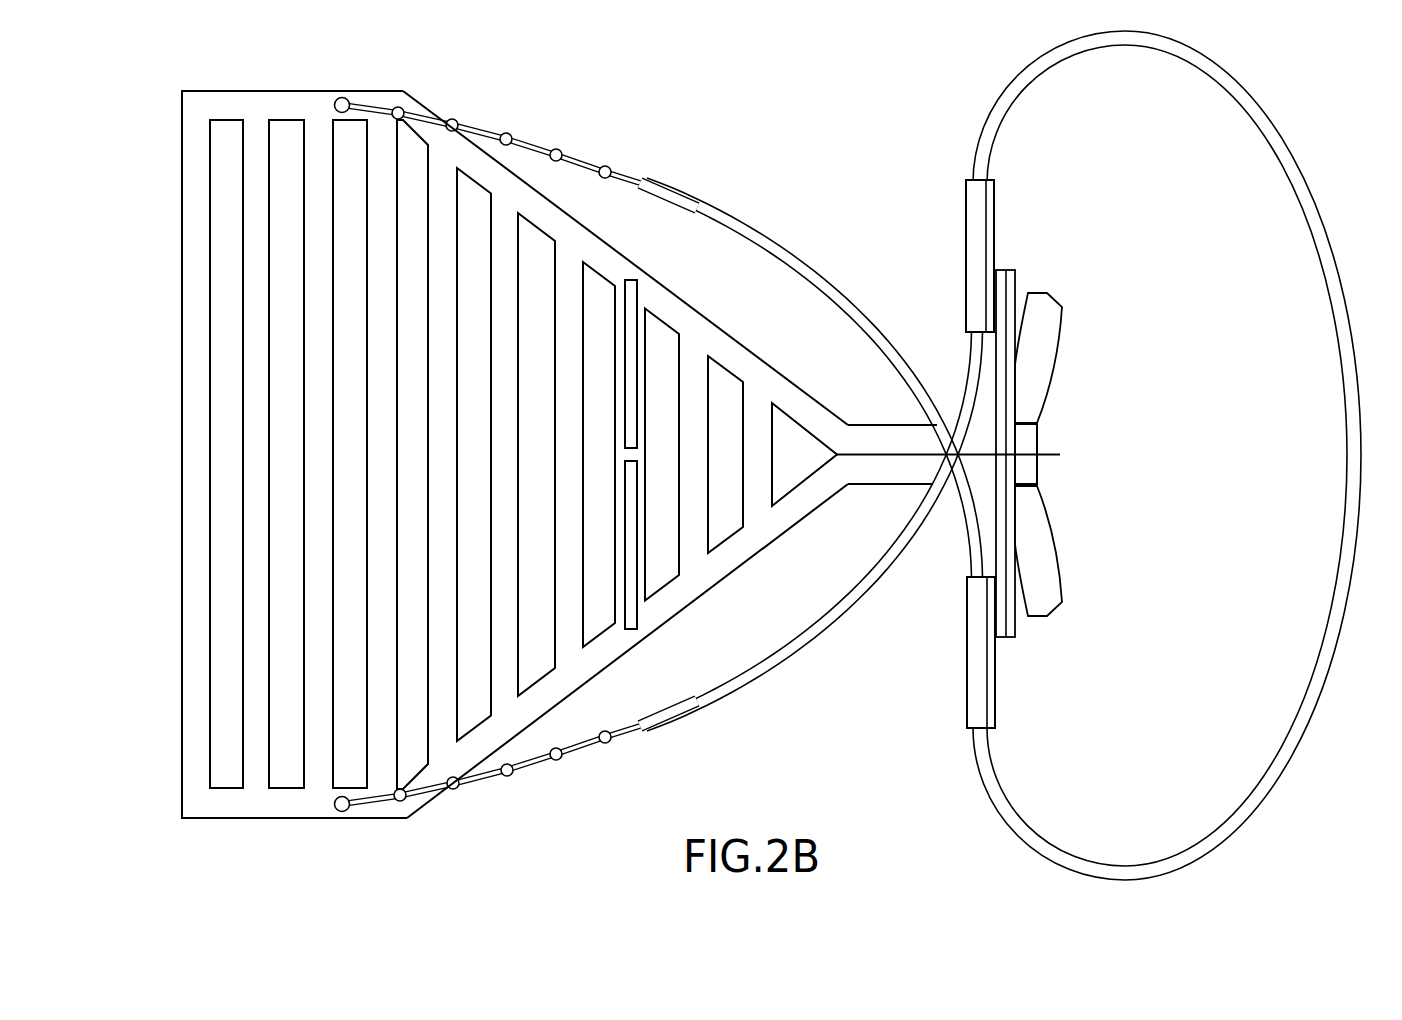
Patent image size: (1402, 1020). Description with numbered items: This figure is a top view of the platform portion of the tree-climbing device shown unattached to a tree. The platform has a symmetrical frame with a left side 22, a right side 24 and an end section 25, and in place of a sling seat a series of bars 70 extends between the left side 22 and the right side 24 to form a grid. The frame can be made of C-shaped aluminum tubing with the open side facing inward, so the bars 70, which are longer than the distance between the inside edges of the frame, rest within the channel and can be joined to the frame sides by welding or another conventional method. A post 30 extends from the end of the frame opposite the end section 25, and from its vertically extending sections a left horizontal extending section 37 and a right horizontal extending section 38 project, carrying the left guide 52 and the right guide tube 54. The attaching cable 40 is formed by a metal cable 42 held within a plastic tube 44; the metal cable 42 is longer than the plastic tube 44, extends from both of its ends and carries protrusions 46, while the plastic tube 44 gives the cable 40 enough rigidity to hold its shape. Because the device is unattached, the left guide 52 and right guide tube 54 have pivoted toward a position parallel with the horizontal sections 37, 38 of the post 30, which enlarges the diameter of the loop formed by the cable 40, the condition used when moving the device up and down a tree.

The left side 22 is at (660, 293).
The right side 24 is at (610, 643).
The end section 25 is at (192, 342).
The post 30 is at (1043, 453).
The left horizontal extending section 37 is at (995, 378).
The right horizontal extending section 38 is at (987, 538).
The cable 40 is at (1320, 254).
The metal cable 42 is at (585, 163).
The plastic tube 44 is at (803, 265).
The protrusions 46 is at (562, 760).
The left guide 52 is at (973, 238).
The right guide tube 54 is at (973, 697).
The bars 70 is at (257, 757).